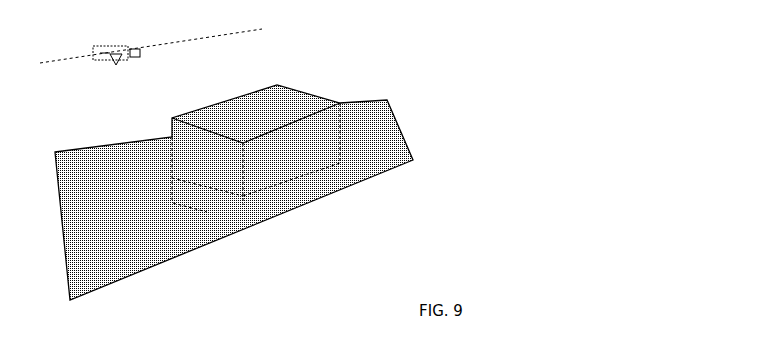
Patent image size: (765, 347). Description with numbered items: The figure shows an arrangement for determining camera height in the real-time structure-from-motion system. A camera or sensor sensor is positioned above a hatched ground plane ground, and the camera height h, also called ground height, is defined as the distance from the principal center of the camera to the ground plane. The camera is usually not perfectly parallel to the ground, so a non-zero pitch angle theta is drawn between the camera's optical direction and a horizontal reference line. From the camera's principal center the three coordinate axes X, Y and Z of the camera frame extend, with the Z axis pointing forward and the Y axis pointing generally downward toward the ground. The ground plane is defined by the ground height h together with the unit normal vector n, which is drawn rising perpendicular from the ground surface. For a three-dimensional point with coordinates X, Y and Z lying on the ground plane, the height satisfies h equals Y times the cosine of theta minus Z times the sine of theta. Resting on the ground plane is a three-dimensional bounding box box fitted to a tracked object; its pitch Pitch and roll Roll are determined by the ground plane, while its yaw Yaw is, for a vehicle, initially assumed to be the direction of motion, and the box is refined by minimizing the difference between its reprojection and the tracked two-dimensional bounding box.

The ground plane ground is at (234, 192).
The 3D bounding box is at (256, 157).
The camera sensor is at (116, 55).
The pitch angle theta is at (130, 34).
The Z coordinate axis Z is at (118, 55).
The X coordinate axis X is at (118, 55).
The Y coordinate axis Y is at (112, 57).
The unit normal vector n is at (140, 205).
The camera height h is at (83, 59).
The roll Roll is at (207, 212).
The pitch Pitch is at (207, 212).
The yaw Yaw is at (207, 212).